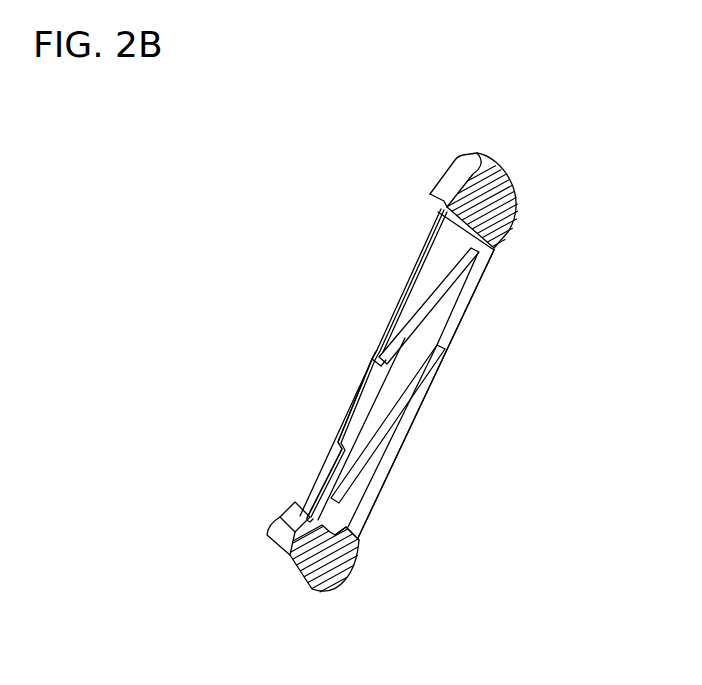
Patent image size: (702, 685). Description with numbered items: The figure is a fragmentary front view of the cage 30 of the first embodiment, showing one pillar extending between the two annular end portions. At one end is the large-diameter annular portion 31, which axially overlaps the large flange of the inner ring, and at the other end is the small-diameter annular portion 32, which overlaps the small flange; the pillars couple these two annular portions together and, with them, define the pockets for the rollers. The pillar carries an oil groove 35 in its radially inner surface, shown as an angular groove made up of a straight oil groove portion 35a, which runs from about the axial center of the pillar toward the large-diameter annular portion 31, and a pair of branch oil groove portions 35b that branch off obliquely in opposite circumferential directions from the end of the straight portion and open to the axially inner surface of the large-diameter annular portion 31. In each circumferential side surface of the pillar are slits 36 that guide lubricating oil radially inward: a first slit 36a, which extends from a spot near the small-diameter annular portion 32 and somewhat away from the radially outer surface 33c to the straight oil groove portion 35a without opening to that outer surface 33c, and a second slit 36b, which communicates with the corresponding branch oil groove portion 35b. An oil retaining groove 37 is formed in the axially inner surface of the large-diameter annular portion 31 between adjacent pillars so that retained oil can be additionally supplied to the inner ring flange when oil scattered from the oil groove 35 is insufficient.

The cage 30 is at (388, 282).
The large-diameter annular portion 31 is at (266, 544).
The small-diameter annular portion 32 is at (447, 183).
The radially outer surface 33c is at (404, 437).
The oil groove 35 is at (299, 326).
The straight oil groove portion 35a is at (375, 352).
The branch oil groove portion 35b is at (327, 473).
The slits 36 is at (543, 282).
The first slit 36a is at (450, 277).
The second slit 36b is at (412, 380).
The oil retaining groove 37 is at (337, 534).